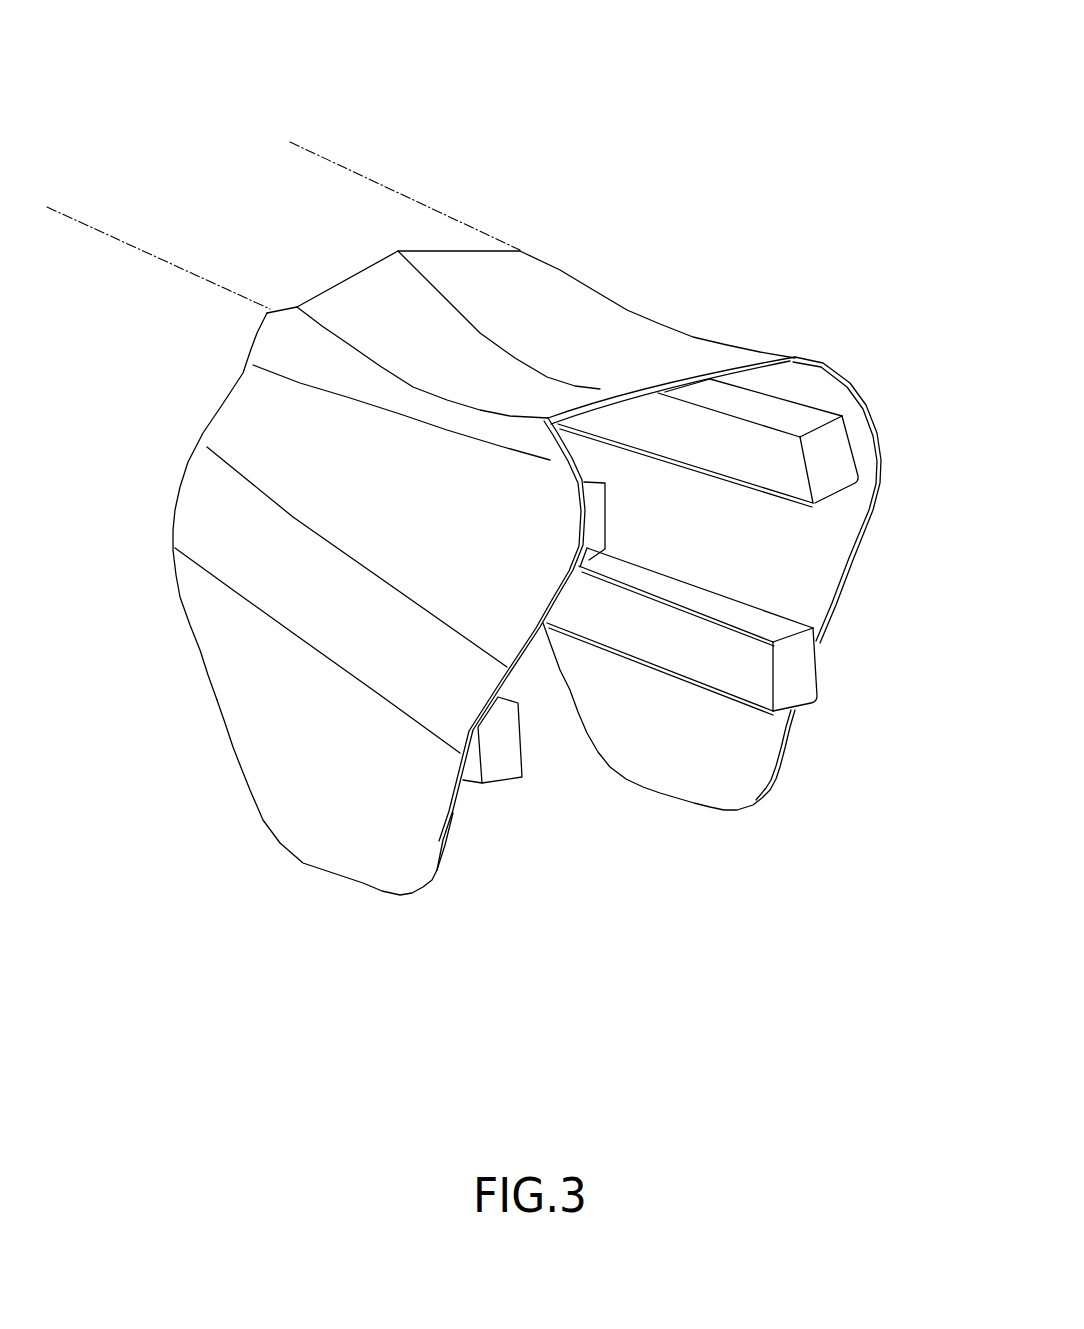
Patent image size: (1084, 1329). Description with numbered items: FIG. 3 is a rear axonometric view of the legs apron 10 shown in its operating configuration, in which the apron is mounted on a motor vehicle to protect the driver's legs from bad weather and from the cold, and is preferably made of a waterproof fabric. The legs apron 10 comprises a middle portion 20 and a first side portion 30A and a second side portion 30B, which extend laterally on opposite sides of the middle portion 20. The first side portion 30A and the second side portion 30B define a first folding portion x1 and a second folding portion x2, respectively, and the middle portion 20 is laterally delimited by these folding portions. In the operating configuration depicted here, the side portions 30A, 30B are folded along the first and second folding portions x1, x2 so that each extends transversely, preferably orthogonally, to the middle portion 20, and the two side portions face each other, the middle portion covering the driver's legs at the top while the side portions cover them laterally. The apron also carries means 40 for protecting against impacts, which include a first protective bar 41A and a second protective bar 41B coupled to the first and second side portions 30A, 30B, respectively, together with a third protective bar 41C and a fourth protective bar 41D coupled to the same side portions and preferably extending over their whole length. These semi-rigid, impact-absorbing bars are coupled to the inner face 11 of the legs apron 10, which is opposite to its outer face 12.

The legs apron 10 is at (722, 185).
The inner face 11 is at (743, 762).
The outer face 12 is at (357, 808).
The middle portion 20 is at (518, 297).
The first side portion 30A is at (218, 704).
The second side portion 30B is at (887, 487).
The means for protecting against impacts 40 is at (711, 601).
The first protective bar 41A is at (612, 519).
The second protective bar 41B is at (803, 403).
The third protective bar 41C is at (498, 787).
The fourth protective bar 41D is at (818, 686).
The first folding portion x1 is at (80, 222).
The second folding portion x2 is at (293, 145).